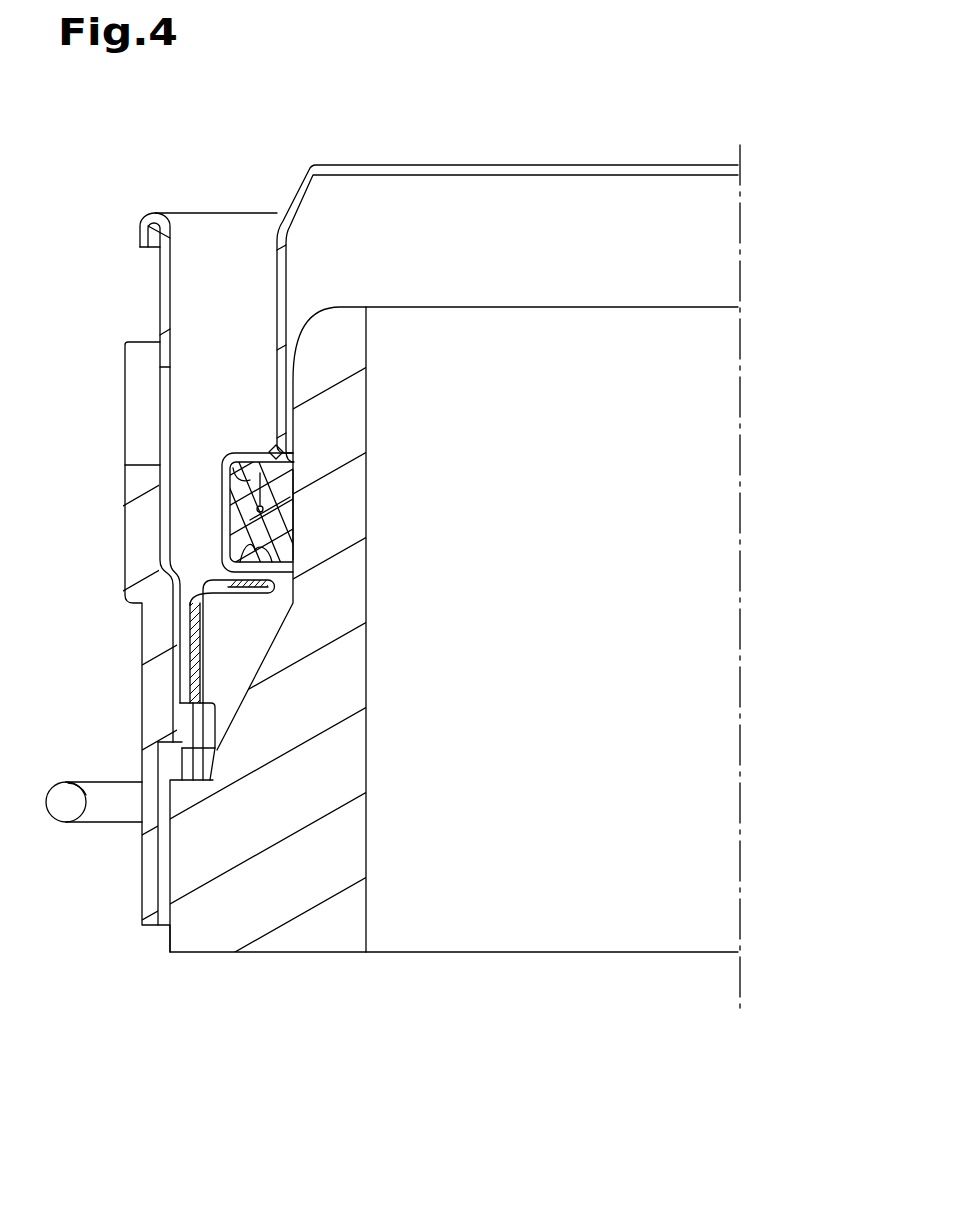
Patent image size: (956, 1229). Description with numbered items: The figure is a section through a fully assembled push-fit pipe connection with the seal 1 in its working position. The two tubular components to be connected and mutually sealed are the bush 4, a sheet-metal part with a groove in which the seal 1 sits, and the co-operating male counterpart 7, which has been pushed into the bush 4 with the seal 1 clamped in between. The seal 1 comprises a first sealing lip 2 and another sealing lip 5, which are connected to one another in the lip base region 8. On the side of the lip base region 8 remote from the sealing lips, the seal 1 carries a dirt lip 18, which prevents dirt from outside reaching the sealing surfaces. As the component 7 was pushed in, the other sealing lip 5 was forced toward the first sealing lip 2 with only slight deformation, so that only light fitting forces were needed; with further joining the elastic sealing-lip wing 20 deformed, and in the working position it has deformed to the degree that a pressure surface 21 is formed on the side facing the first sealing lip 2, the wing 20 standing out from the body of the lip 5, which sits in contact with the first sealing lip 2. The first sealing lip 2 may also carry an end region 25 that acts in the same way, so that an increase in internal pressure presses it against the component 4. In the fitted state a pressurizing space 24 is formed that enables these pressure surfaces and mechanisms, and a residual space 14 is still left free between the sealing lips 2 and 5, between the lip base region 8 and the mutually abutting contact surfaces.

The seal 1 is at (249, 503).
The first sealing lip 2 is at (228, 490).
The component (bush) 4 is at (220, 466).
The other sealing lip 5 is at (293, 487).
The component (male counterpart) 7 is at (213, 922).
The lip base region 8 is at (293, 528).
The residual space 14 is at (224, 503).
The dirt lip 18 is at (236, 556).
The sealing-lip wing 20 is at (293, 465).
The pressure surface 21 is at (275, 450).
The pressurizing space 24 is at (262, 458).
The end region 25 is at (235, 470).